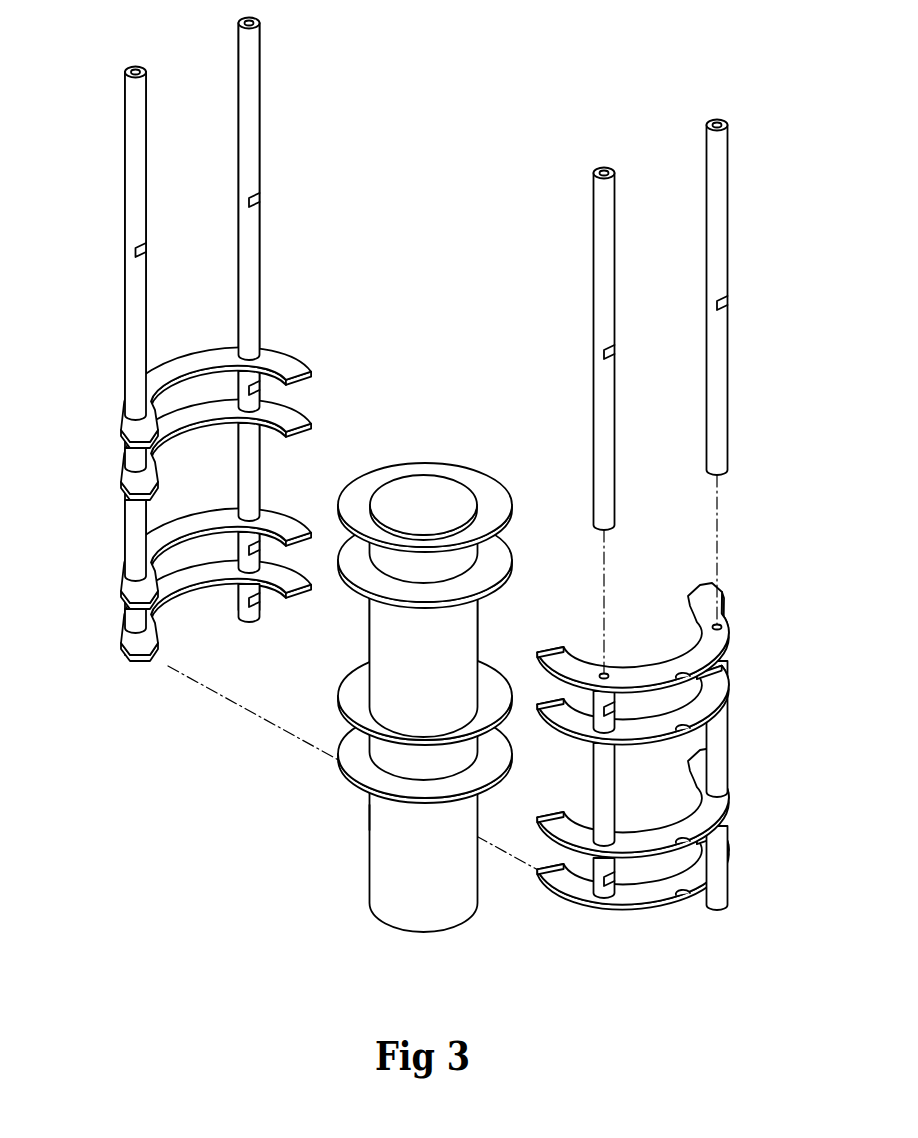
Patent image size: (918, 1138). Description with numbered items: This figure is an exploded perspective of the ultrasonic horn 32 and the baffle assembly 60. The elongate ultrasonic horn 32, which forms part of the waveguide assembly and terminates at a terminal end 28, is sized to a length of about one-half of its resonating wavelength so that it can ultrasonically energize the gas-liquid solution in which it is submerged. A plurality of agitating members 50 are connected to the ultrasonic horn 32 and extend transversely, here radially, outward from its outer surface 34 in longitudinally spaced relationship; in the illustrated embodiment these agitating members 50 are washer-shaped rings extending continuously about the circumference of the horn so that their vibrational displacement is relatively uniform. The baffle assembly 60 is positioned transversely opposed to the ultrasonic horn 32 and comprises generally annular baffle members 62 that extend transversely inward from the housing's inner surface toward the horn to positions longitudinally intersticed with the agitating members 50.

The terminal end 28 is at (437, 503).
The ultrasonic horn 32 is at (400, 850).
The outer surface 34 is at (370, 815).
The agitating members 50 is at (357, 568).
The baffle assembly 60 is at (728, 597).
The baffle members 62 is at (124, 462).